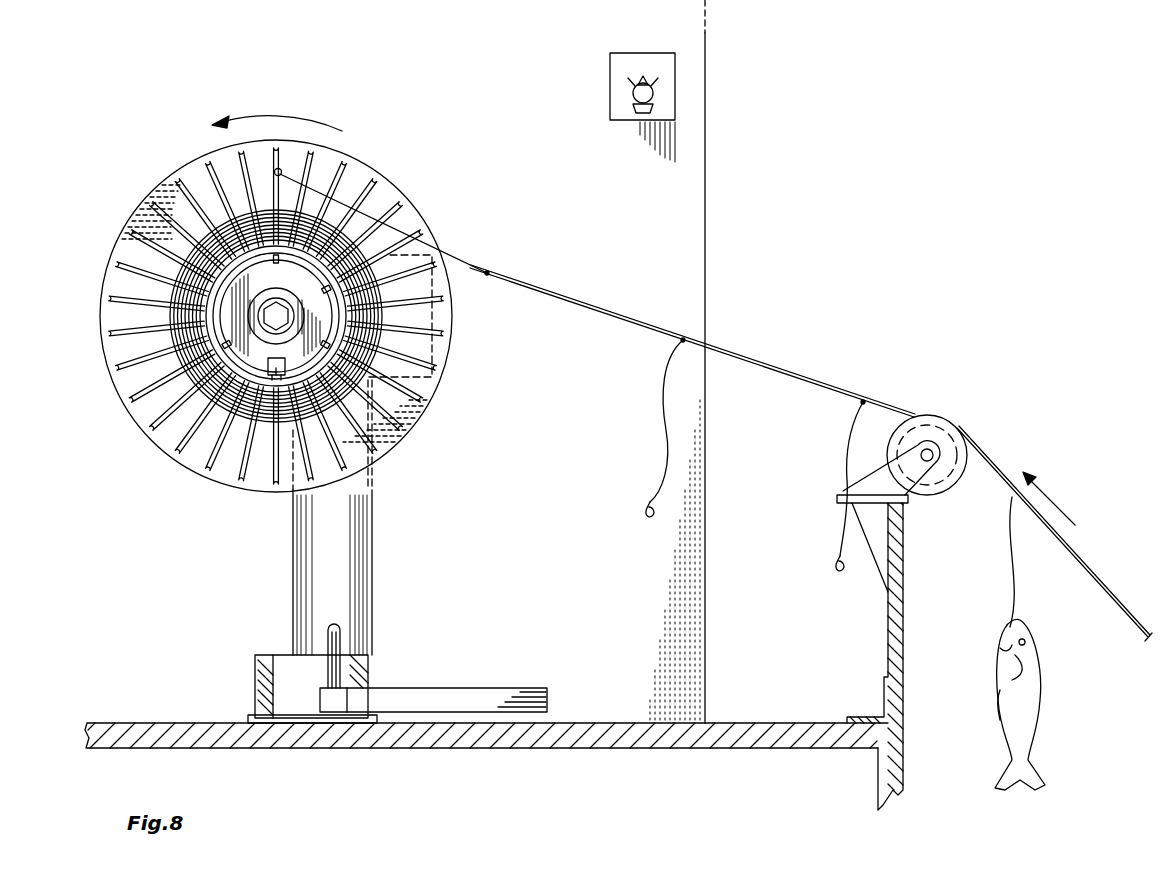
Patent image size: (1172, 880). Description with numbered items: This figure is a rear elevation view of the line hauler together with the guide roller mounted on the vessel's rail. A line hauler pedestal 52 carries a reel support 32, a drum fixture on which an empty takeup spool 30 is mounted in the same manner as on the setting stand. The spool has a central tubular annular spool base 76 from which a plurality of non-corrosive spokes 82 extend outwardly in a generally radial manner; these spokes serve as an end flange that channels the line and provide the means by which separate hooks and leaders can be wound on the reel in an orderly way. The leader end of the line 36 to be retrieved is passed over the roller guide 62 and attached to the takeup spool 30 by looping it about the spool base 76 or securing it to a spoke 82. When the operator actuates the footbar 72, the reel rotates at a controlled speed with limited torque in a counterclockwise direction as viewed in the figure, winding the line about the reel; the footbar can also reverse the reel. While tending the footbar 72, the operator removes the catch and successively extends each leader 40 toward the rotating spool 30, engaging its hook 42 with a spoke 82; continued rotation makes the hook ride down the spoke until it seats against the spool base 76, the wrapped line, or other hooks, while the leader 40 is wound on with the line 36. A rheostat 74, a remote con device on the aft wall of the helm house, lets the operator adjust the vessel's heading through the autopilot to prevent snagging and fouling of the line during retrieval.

The takeup spool 30 is at (266, 316).
The reel support 32 is at (330, 303).
The line 36 is at (580, 300).
The leader 40 is at (417, 218).
The hook 42 is at (282, 170).
The line hauler pedestal 52 is at (390, 566).
The roller guide 62 is at (956, 425).
The footbar 72 is at (458, 687).
The rheostat 74 is at (609, 102).
The spool base 76 is at (420, 407).
The spokes 82 is at (255, 157).